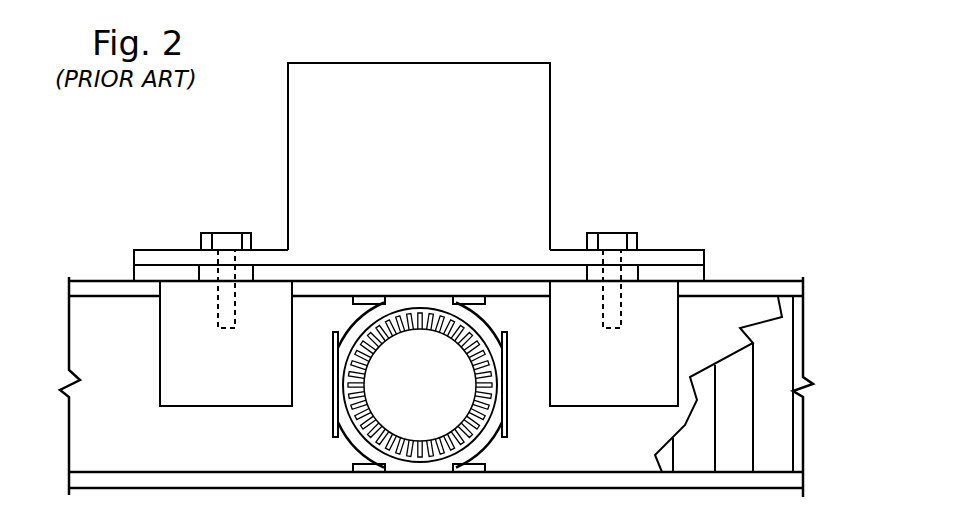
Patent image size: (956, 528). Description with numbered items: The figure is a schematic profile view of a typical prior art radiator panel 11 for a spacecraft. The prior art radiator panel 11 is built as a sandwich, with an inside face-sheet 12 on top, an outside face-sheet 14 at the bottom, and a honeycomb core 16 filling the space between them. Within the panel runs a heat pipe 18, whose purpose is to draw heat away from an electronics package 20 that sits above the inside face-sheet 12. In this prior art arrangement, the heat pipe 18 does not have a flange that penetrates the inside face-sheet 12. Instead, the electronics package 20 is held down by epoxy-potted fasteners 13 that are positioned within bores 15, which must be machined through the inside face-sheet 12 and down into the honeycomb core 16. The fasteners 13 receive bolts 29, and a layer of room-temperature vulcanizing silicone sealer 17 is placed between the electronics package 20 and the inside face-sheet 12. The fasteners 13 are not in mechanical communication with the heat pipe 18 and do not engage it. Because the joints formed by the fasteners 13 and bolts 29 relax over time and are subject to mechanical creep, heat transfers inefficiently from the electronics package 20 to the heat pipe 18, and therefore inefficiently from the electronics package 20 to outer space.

The prior art radiator panel 11 is at (752, 173).
The inside face-sheet 12 is at (767, 281).
The epoxy-potted fasteners 13 is at (160, 347).
The outside face-sheet 14 is at (691, 489).
The bores 15 is at (292, 290).
The honeycomb core 16 is at (748, 425).
The RTV silicone sealer 17 is at (393, 268).
The heat pipe 18 is at (509, 405).
The electronics package 20 is at (457, 63).
The bolts 29 is at (226, 232).